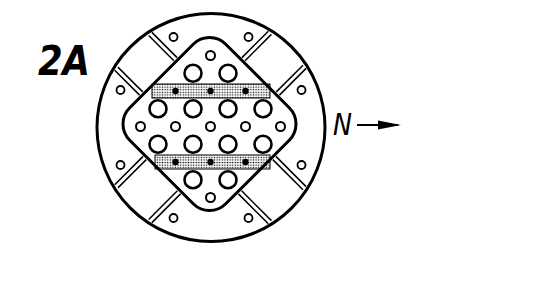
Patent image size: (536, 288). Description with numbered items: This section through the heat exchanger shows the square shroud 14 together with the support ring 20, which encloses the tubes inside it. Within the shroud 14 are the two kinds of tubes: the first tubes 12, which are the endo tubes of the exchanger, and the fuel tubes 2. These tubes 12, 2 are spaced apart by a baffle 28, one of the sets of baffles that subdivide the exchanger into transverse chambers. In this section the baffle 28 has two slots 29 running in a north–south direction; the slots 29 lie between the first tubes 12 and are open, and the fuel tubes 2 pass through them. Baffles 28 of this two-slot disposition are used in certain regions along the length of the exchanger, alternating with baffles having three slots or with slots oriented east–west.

The fuel tubes 2 is at (128, 117).
The first tubes 12 is at (248, 184).
The square shroud 14 is at (172, 186).
The support ring 20 is at (308, 150).
The baffle 28 is at (138, 140).
The slots 29 is at (257, 80).